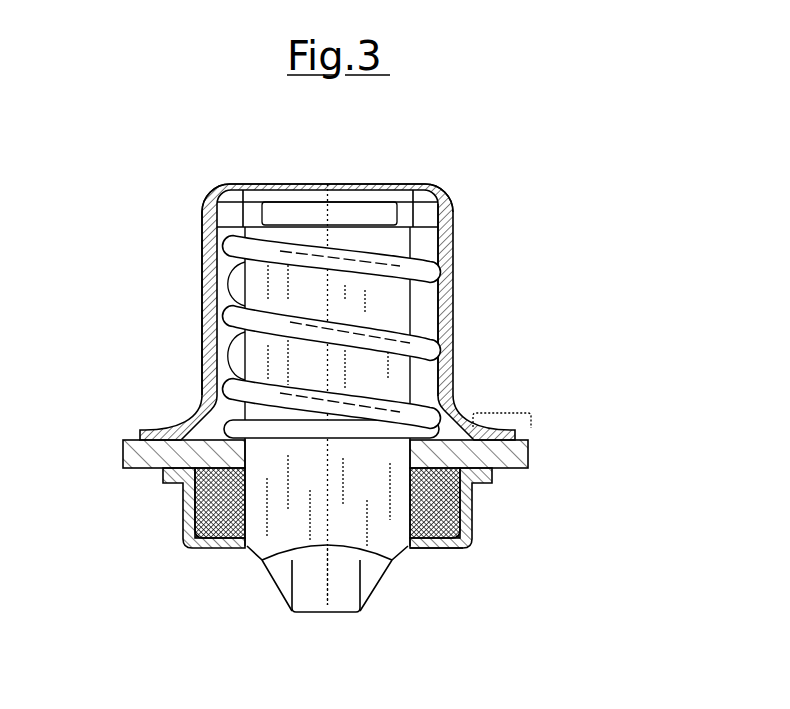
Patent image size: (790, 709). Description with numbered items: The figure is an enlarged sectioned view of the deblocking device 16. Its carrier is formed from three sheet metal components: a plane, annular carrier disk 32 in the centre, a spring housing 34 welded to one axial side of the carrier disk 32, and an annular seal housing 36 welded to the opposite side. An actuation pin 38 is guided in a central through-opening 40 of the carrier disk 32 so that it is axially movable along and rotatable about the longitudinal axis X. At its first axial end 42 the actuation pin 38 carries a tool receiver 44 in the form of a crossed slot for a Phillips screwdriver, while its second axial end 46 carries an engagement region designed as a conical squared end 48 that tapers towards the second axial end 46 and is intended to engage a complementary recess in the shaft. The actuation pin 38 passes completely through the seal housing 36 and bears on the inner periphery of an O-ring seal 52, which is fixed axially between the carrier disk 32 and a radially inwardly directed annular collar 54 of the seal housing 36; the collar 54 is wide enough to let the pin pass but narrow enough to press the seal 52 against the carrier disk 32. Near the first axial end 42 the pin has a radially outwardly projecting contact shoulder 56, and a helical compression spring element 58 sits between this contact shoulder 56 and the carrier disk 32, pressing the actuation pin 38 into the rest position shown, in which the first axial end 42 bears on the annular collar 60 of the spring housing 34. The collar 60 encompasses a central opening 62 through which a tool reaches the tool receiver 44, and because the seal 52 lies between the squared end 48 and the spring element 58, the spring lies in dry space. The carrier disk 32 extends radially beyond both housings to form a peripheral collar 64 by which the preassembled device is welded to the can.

The deblocking device 16 is at (464, 312).
The carrier disk 32 is at (528, 455).
The spring housing 34 is at (453, 370).
The seal housing 36 is at (472, 537).
The actuation pin 38 is at (258, 285).
The central through-opening 40 is at (181, 490).
The first axial end 42 is at (437, 186).
The tool receiver 44 is at (340, 185).
The second axial end 46 is at (303, 620).
The squared end 48 is at (280, 597).
The seal 52 is at (473, 515).
The annular collar 54 is at (430, 550).
The contact shoulder 56 is at (453, 213).
The spring element 58 is at (204, 318).
The annular collar 60 is at (232, 186).
The central opening 62 is at (296, 186).
The collar 64 is at (503, 408).
The longitudinal axis X is at (328, 567).